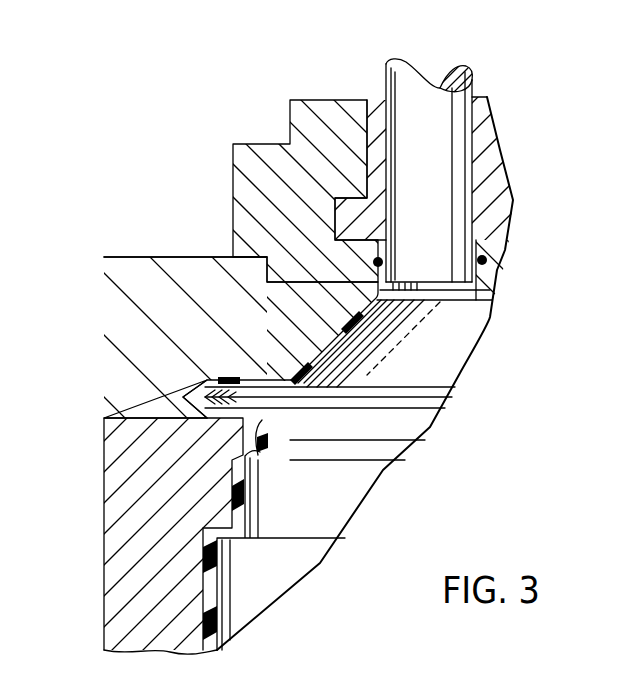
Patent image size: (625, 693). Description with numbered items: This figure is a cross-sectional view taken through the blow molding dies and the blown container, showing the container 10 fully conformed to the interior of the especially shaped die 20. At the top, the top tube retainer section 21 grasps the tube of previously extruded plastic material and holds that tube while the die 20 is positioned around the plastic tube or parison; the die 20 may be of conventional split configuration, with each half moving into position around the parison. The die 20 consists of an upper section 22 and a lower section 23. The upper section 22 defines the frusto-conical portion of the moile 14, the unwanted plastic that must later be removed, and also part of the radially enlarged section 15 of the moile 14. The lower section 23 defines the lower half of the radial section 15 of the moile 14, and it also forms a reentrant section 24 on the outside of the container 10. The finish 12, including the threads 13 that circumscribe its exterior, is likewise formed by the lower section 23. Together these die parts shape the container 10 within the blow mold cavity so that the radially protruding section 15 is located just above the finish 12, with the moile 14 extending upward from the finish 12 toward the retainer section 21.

The container 10 is at (448, 427).
The finish portion 12 is at (233, 465).
The threads 13 is at (260, 434).
The moile 14 is at (475, 330).
The radially enlarged section 15 is at (219, 377).
The die 20 is at (119, 257).
The top tube retainer section 21 is at (256, 144).
The upper section 22 is at (104, 304).
The lower section 23 is at (104, 450).
The reentrant section 24 is at (265, 448).